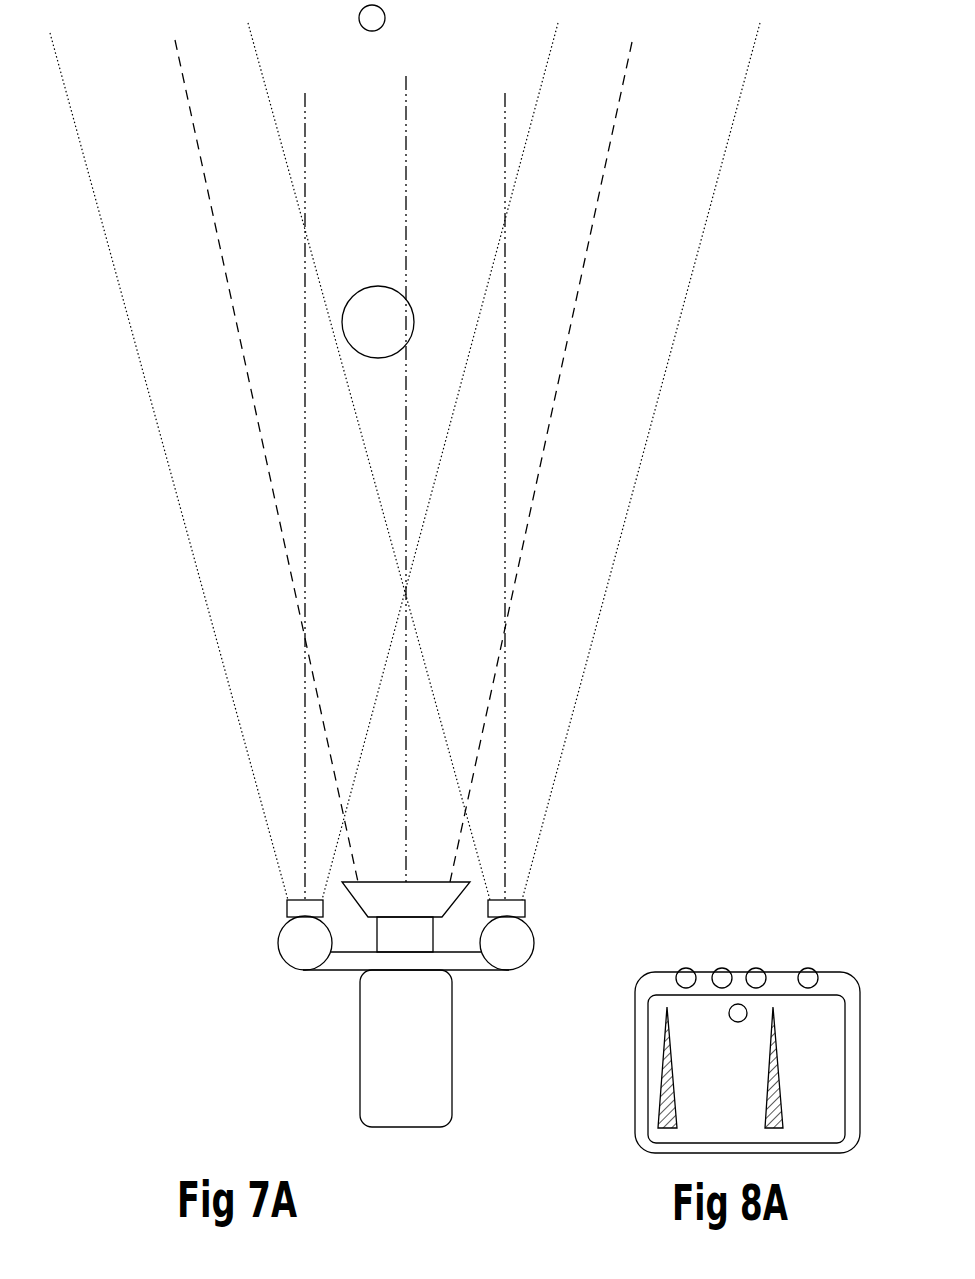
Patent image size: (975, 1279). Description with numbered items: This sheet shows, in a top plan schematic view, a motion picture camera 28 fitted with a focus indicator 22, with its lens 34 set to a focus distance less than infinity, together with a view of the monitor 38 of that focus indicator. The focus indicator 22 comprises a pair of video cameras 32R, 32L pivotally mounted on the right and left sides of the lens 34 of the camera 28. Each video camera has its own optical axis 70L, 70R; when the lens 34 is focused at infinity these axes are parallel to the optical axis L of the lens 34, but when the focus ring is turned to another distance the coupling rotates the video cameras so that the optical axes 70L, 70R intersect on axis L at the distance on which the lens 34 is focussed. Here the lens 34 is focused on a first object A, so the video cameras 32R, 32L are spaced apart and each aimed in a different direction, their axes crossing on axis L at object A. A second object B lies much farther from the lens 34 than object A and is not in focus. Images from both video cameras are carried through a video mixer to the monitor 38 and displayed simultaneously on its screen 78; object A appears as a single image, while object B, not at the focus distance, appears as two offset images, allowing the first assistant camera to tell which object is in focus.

In FIG. 7A, the optical axis 70L is at (297, 765).
In FIG. 7A, the optical axis 70R is at (505, 793).
In FIG. 7A, the video camera 32L is at (293, 933).
In FIG. 7A, the video camera 32R is at (503, 935).
In FIG. 7A, the focus indicator 22 is at (353, 963).
In FIG. 7A, the lens 34 is at (410, 933).
In FIG. 7A, the motion picture camera 28 is at (380, 1103).
In FIG. 8A, the monitor 38 is at (855, 1065).
In FIG. 8A, the monitor screen 78 is at (807, 1113).
In FIG. 7A, the first object A is at (395, 322).
In FIG. 8A, the first object A is at (667, 1107).
In FIG. 7A, the second object B is at (376, 25).
In FIG. 8A, the second object B is at (730, 1012).
In FIG. 7A, the optical axis of lens L is at (413, 400).